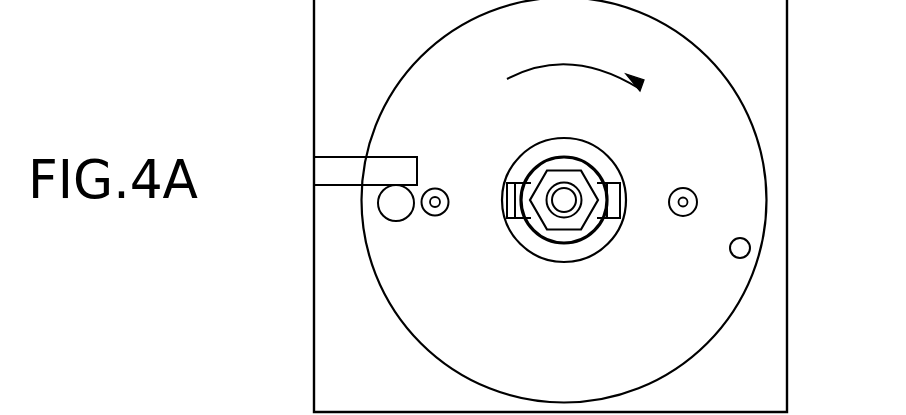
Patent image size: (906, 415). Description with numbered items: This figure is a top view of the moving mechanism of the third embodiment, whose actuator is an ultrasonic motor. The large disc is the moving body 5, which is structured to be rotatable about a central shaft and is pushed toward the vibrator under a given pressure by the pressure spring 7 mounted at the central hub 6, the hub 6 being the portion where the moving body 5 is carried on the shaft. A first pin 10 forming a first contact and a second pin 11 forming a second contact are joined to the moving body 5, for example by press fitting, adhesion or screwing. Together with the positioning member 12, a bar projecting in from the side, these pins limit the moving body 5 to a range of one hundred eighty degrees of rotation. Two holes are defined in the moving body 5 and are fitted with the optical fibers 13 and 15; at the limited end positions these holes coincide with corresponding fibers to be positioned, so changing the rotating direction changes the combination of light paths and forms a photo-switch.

The moving body 5 is at (392, 272).
The hub 6 is at (522, 164).
The pressure spring 7 is at (597, 192).
The first pin 10 is at (394, 202).
The second pin 11 is at (750, 248).
The positioning member 12 is at (342, 163).
The optical fiber 13 is at (436, 189).
The optical fiber 15 is at (697, 200).